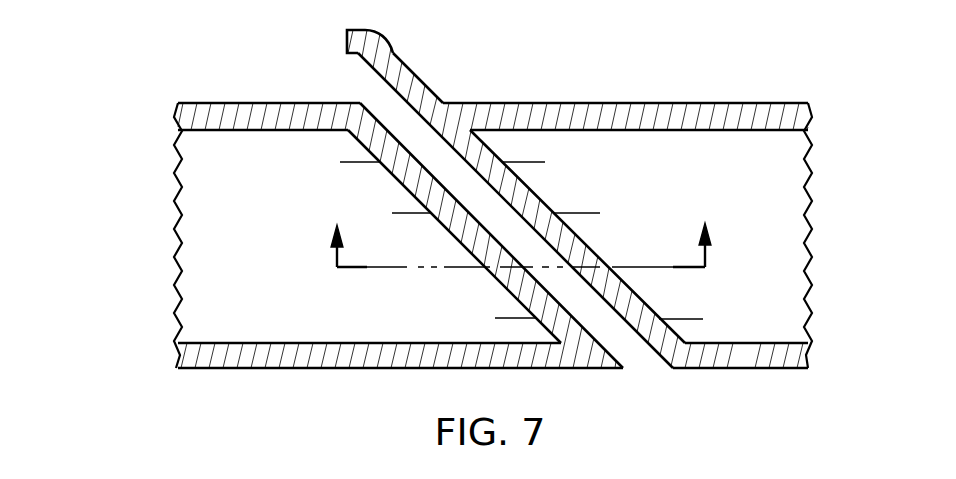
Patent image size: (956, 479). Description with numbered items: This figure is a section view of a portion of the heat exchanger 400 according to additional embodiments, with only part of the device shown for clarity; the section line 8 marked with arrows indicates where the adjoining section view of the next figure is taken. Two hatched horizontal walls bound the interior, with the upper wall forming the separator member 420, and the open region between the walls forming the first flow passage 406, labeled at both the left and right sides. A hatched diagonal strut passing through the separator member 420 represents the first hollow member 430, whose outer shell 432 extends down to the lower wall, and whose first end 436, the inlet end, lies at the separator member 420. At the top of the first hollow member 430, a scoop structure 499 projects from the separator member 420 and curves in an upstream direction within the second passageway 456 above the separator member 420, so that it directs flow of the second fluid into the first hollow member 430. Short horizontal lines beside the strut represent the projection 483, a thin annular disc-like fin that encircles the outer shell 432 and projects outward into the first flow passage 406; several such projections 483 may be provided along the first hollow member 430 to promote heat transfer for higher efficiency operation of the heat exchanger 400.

The heat exchanger 400 is at (131, 101).
The first flow passage 406 is at (320, 316).
The separator member 420 is at (262, 103).
The first hollow member 430 is at (562, 186).
The outer shell 432 is at (575, 240).
The first end 436 is at (371, 103).
The second passageway 456 is at (462, 90).
The projection 483 is at (530, 162).
The scoop structure 499 is at (383, 53).
The section line 8- 8 is at (521, 226).